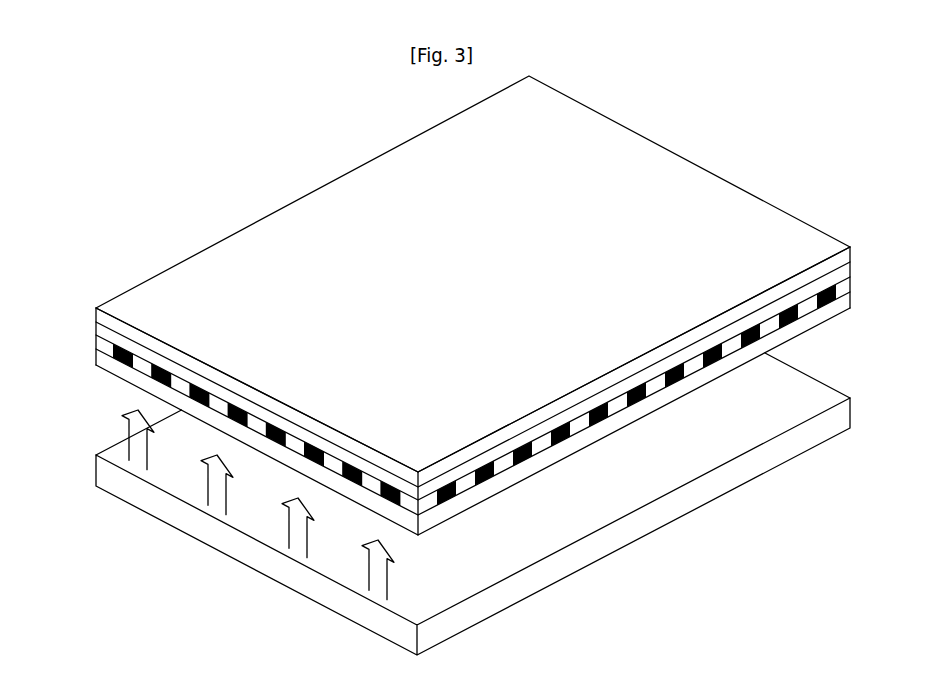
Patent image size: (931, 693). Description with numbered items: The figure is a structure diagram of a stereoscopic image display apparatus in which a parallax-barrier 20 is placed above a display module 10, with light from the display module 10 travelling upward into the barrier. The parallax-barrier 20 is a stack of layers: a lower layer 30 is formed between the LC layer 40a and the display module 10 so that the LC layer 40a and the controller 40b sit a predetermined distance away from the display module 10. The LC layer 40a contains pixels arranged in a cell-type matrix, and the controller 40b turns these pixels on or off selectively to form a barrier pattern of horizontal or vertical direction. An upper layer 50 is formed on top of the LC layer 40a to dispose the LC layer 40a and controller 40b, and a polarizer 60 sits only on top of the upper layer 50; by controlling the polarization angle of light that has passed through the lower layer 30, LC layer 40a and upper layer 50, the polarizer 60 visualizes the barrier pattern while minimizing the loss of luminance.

The display module 10 is at (96, 470).
The parallax-barrier 20 is at (96, 308).
The lower layer 30 is at (422, 531).
The LC layer 40a is at (430, 521).
The controller 40b is at (473, 464).
The upper layer 50 is at (440, 512).
The polarizer 60 is at (452, 503).